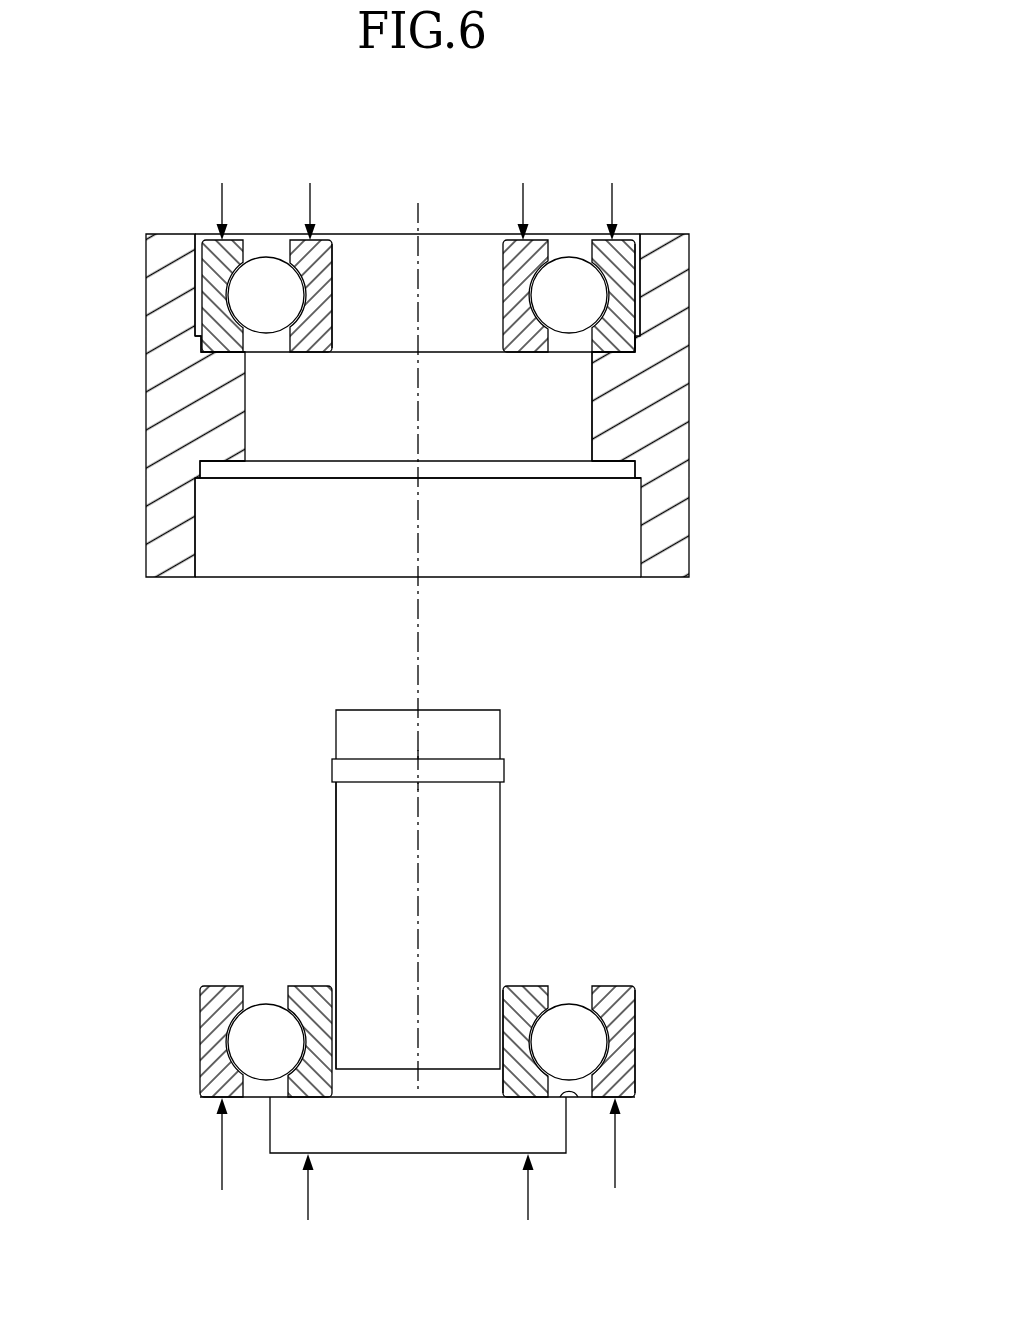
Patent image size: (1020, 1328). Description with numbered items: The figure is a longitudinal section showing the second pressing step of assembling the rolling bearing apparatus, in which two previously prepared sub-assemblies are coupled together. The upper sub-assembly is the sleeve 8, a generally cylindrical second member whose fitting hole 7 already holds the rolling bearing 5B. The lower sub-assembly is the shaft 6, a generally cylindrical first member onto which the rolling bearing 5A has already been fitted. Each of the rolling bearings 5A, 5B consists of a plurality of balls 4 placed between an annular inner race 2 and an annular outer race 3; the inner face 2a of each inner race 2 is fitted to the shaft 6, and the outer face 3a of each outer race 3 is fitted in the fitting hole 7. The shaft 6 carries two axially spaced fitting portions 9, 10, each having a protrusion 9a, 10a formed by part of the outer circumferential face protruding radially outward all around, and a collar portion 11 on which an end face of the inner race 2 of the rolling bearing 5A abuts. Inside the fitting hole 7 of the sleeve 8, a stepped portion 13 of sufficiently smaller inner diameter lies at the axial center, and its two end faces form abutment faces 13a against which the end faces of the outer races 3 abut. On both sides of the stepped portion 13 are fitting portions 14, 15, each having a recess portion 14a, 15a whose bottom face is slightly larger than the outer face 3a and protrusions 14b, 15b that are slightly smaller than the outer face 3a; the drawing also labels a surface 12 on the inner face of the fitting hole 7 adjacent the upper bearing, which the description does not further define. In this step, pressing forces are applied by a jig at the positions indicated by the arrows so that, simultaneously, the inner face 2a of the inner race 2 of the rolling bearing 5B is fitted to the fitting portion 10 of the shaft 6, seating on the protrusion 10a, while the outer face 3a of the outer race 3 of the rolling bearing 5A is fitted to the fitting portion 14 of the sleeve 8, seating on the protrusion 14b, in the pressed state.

The inner race 2 is at (304, 240).
The inner face of inner race 2a is at (336, 252).
The outer race 3 is at (212, 240).
The outer face of outer race 3a is at (636, 246).
The balls 4 is at (266, 258).
The rolling bearing 5A is at (185, 1039).
The rolling bearing 5B is at (492, 258).
The shaft 6 is at (590, 830).
The fitting hole 7 is at (380, 542).
The sleeve 8 is at (690, 410).
The fitting portion 9 is at (345, 997).
The protrusion 9a is at (418, 1125).
The fitting portion 10 is at (247, 814).
The protrusion 10a is at (332, 769).
The collar portion 11 is at (580, 1098).
The bearing fitting surface 12 is at (641, 298).
The stepped portion 13 is at (597, 416).
The abutment faces 13a is at (636, 346).
The fitting portion 14 is at (602, 493).
The recess portion 14a is at (198, 566).
The protrusion 14b is at (212, 448).
The fitting portion 15 is at (585, 342).
The recess portion 15a is at (205, 295).
The protrusion 15b is at (212, 357).